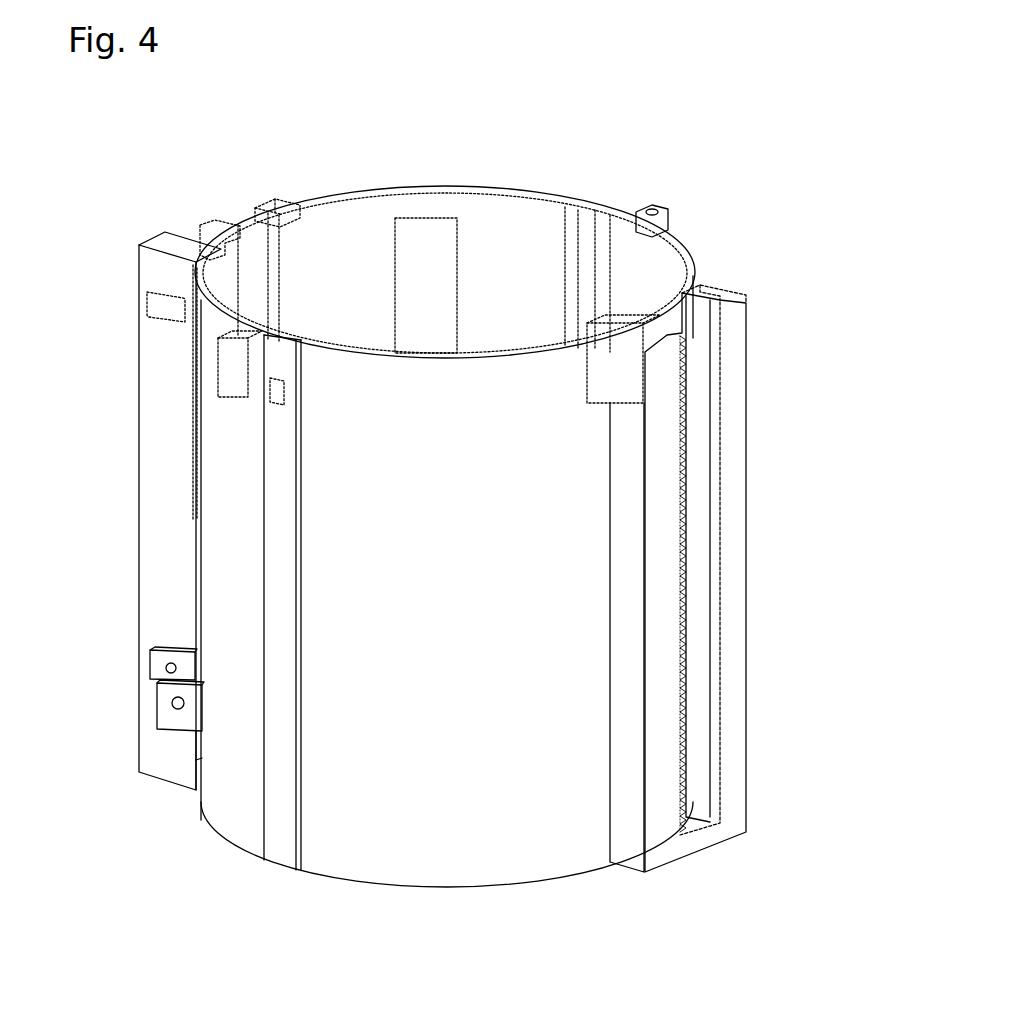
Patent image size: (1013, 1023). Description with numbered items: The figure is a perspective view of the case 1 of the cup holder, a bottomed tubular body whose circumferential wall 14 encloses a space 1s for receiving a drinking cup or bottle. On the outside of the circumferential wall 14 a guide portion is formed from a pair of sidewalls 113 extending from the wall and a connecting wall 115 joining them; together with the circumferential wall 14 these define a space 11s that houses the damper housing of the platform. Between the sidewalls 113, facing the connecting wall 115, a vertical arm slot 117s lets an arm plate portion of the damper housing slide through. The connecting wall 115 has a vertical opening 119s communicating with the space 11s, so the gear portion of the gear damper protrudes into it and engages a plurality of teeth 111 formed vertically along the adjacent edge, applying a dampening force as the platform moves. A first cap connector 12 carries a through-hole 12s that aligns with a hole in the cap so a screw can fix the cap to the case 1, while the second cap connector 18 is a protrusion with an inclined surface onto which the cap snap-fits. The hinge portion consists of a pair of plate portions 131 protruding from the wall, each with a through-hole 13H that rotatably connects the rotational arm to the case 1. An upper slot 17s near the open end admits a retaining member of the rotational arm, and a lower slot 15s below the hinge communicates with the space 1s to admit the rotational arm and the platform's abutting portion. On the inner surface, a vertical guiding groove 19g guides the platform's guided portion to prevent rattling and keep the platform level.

The case 1 is at (158, 188).
The space 1s is at (502, 321).
The space 11s is at (683, 318).
The teeth 111 is at (212, 240).
The sidewalls 113 is at (155, 525).
The connecting wall 115 is at (730, 545).
The arm slot 117s is at (275, 262).
The opening 119s is at (686, 446).
The first cap connector 12 is at (232, 370).
The through-hole 12s is at (272, 205).
The plate portions 131 is at (173, 717).
The through-hole 13H is at (172, 703).
The circumferential wall 14 is at (461, 597).
The lower slot 15s is at (192, 778).
The upper slot 17s is at (446, 296).
The second cap connector 18 is at (165, 302).
The guiding groove 19g is at (290, 335).